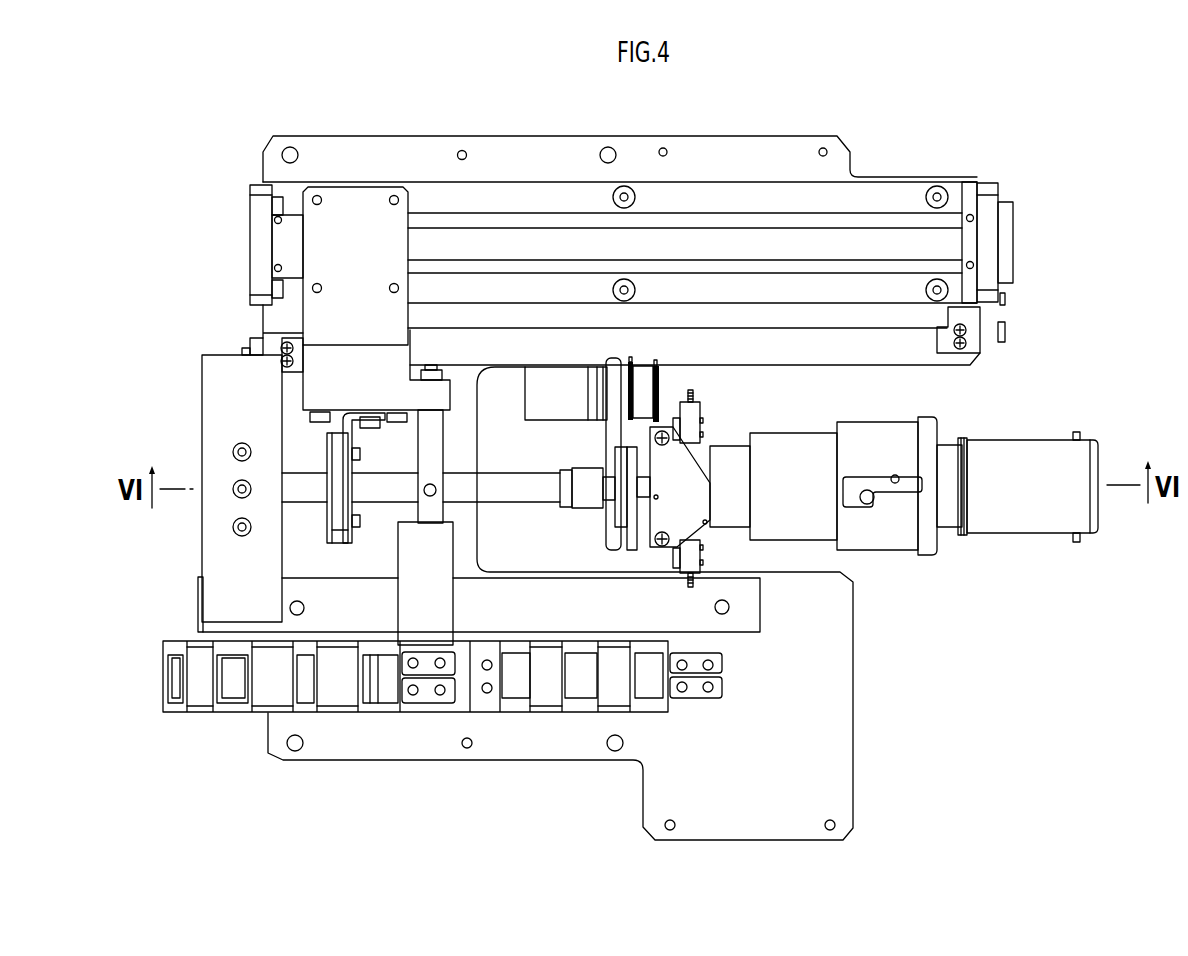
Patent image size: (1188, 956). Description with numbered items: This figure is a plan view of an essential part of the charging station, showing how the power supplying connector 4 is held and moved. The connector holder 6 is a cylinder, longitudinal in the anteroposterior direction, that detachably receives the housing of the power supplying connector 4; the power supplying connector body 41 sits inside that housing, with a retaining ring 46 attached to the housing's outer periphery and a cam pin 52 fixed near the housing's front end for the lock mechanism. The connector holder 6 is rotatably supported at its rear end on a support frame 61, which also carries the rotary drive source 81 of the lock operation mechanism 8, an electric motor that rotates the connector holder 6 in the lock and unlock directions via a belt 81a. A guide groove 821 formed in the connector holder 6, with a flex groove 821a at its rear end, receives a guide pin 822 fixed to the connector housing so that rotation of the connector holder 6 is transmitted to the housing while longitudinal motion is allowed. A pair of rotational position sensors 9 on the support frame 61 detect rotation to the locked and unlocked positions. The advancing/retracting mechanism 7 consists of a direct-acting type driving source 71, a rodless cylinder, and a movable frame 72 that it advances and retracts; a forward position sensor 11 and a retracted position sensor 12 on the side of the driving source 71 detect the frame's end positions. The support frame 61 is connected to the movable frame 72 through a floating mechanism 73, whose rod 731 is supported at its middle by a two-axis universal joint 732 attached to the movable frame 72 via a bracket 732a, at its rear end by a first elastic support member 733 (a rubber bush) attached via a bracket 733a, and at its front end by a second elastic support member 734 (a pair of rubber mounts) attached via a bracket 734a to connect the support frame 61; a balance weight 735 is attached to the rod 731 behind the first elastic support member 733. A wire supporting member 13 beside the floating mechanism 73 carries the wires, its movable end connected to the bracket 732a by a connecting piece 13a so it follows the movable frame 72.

The advancing/retracting mechanism 7 is at (642, 102).
The direct-acting type driving source 71 is at (565, 181).
The movable frame 72 is at (372, 228).
The floating mechanism 73 is at (487, 466).
The lock operation mechanism 8 is at (672, 388).
The rotary drive source 81 is at (560, 384).
The belt 81a is at (645, 377).
The guide pin 822 is at (868, 490).
The guide groove 821 is at (895, 477).
The flex groove 821a is at (853, 506).
The rotational position sensor 9 is at (703, 411).
The support frame 61 is at (642, 546).
The connector holder 6 is at (845, 422).
The second elastic support member 734 is at (615, 466).
The bracket 734a is at (581, 491).
The universal joint 732 is at (444, 497).
The bracket 732a is at (445, 436).
The rod 731 is at (384, 478).
The first elastic support member 733 is at (332, 533).
The bracket 733a is at (349, 543).
The balance weight 735 is at (207, 412).
The retracted position sensor 12 is at (272, 344).
The forward position sensor 11 is at (972, 341).
The wire supporting member 13 is at (334, 706).
The connecting piece 13a is at (453, 605).
The power supplying connector 4 is at (1047, 428).
The power supplying connector body 41 is at (1030, 534).
The retaining ring 46 is at (963, 536).
The cam pin 52 is at (1077, 432).